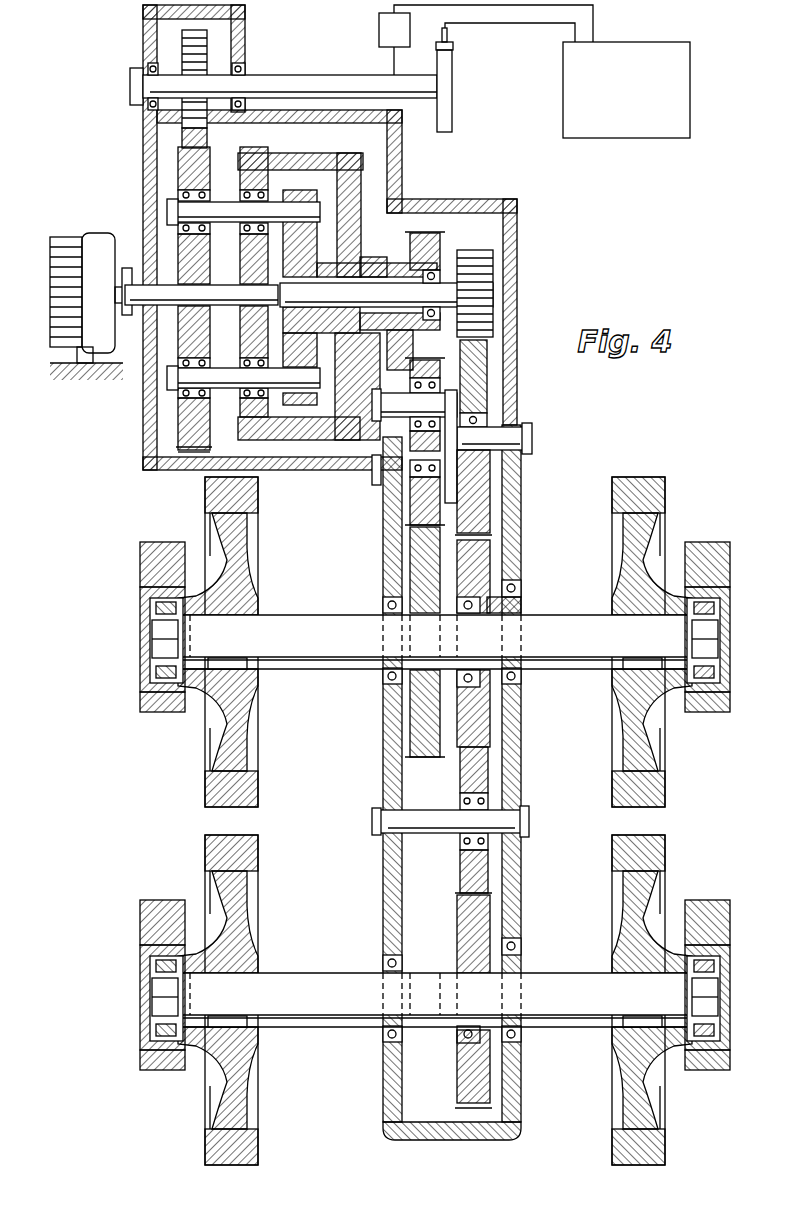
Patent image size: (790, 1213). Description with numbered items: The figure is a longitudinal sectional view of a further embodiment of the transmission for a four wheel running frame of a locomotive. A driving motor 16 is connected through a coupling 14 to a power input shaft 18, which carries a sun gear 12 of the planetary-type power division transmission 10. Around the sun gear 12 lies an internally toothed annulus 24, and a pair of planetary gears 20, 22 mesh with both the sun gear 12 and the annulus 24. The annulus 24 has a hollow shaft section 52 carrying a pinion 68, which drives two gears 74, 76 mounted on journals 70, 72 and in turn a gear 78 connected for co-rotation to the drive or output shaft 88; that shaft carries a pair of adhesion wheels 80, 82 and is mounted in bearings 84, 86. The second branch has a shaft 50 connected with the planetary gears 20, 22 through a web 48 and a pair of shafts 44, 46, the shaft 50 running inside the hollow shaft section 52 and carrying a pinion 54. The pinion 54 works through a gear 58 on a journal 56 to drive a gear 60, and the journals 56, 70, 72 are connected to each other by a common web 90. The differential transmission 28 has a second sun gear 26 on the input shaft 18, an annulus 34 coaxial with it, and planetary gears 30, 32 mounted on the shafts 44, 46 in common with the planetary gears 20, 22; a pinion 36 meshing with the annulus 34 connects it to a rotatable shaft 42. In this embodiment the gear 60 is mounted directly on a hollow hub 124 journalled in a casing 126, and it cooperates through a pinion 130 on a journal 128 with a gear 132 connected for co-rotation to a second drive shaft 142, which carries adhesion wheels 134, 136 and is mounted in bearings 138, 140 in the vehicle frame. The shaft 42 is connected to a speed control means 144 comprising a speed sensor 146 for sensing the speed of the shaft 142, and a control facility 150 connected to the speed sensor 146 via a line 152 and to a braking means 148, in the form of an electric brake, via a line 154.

The power division transmission 10 is at (290, 458).
The sun gear 12 is at (262, 262).
The coupling 14 is at (127, 268).
The driving motor 16 is at (68, 245).
The power input shaft 18 is at (222, 302).
The planetary gear 20 is at (250, 353).
The planetary gear 22 is at (240, 183).
The internally toothed annulus 24 is at (268, 160).
The second sun gear 26 is at (196, 250).
The differential transmission 28 is at (196, 462).
The planetary gear 30 is at (178, 413).
The planetary gear 32 is at (178, 174).
The internally toothed annulus 34 is at (186, 450).
The pinion 36 is at (205, 50).
The shaft 42 is at (300, 75).
The shaft 44 is at (280, 390).
The shaft 46 is at (280, 210).
The web 48 is at (304, 198).
The shaft 50 is at (386, 295).
The hollow shaft section 52 is at (374, 257).
The pinion 54 is at (480, 290).
The journal 56 is at (532, 440).
The gear 58 is at (490, 500).
The gear 60 is at (482, 553).
The pinion 68 is at (432, 256).
The journal 70 is at (414, 389).
The journal 72 is at (410, 445).
The gear 74 is at (378, 462).
The gear 76 is at (410, 517).
The gear 78 is at (415, 553).
The adhesion wheel 80 is at (212, 790).
The adhesion wheel 82 is at (660, 790).
The bearing 84 is at (162, 712).
The bearing 86 is at (710, 712).
The drive or output shaft 88 is at (316, 660).
The common web 90 is at (457, 475).
The hollow hub 124 is at (512, 605).
The casing 126 is at (382, 761).
The journal 128 is at (508, 822).
The pinion 130 is at (485, 772).
The gear 132 is at (485, 910).
The adhesion wheel 134 is at (238, 1097).
The adhesion wheel 136 is at (636, 1106).
The bearing 138 is at (163, 1070).
The bearing 140 is at (710, 1070).
The second drive shaft 142 is at (316, 1020).
The speed control means 144 is at (513, 108).
The speed sensor 146 is at (379, 22).
The braking means 148 is at (470, 72).
The control facility 150 is at (642, 42).
The line 152 is at (512, 6).
The line 154 is at (480, 24).